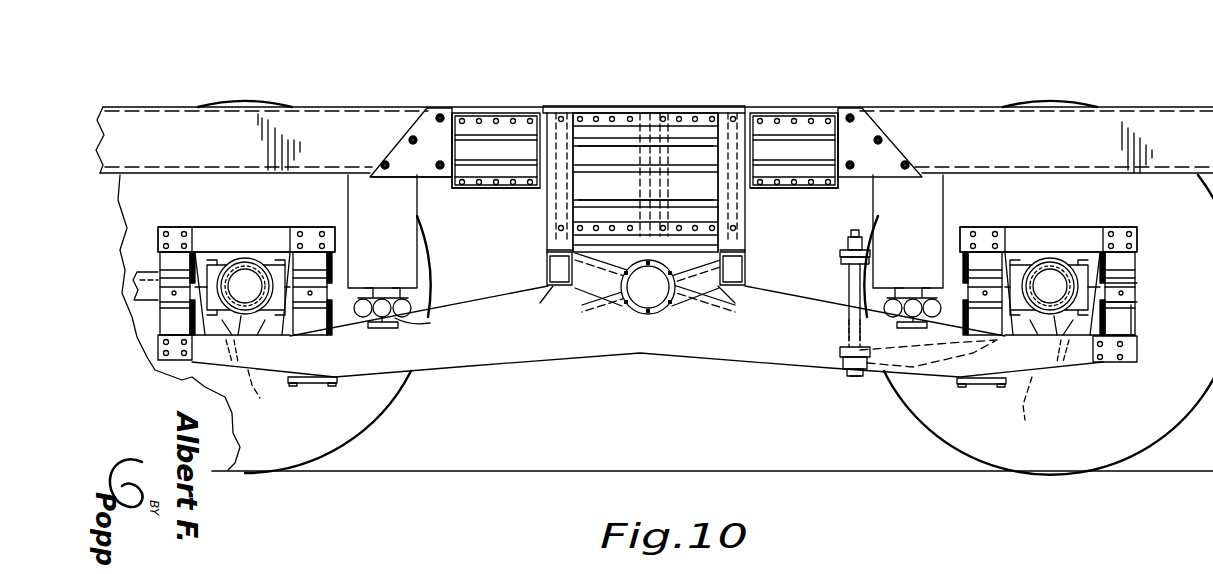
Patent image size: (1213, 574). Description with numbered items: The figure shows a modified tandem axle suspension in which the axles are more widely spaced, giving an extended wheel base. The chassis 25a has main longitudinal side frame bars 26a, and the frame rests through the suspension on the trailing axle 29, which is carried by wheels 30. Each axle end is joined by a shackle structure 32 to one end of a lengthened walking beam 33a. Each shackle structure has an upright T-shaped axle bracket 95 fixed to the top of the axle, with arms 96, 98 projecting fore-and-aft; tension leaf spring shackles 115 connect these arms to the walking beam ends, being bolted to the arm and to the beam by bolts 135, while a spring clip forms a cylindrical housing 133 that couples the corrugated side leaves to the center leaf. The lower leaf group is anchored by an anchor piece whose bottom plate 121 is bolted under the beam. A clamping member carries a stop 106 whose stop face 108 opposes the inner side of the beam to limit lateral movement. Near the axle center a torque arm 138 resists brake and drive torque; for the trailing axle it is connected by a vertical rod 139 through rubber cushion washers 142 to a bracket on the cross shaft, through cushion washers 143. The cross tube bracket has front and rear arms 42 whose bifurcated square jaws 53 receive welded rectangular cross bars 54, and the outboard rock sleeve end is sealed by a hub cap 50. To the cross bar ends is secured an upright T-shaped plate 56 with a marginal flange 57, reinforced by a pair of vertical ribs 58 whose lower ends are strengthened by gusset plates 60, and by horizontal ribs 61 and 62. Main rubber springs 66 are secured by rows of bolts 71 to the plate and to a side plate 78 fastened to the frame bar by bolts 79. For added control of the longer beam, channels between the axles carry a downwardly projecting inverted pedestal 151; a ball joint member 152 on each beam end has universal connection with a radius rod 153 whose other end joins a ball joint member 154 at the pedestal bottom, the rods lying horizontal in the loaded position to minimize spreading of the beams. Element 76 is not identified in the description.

The chassis 25a is at (152, 100).
The main longitudinal side frame bar 26a is at (1200, 122).
The side plate 78 is at (441, 113).
The bolts 79 is at (410, 138).
The side plate flange 76 is at (491, 118).
The vertical ribs 58 is at (563, 116).
The bolts 71 is at (612, 117).
The main rubber springs 66 is at (659, 112).
The upright metal plate 56 is at (676, 152).
The marginal flange 57 is at (496, 190).
The horizontal ribs 61 is at (494, 168).
The horizontal ribs 62 is at (616, 140).
The gusset plates 60 is at (547, 274).
The square jaws 53 is at (549, 246).
The cross bars 54 is at (550, 262).
The hub cap 50 is at (641, 304).
The arms 42 is at (712, 290).
The inverted pedestal 151 is at (420, 229).
The radius rod 153 is at (396, 318).
The ball joint member 152 is at (393, 340).
The walking beam 33a is at (600, 360).
The shackle structure 32 is at (148, 258).
The arm 96 is at (202, 228).
The arm 98 is at (293, 228).
The T-shaped axle bracket 95 is at (246, 226).
The trailing axle 29 is at (263, 266).
The stop face 108 is at (255, 336).
The stop 106 is at (253, 390).
The bottom plate 121 is at (312, 384).
The axle torque arm 138 is at (137, 288).
The ball joint member 154 is at (398, 296).
The wheels 30 is at (372, 420).
The cushion washers 143 is at (843, 251).
The vertical rod 139 is at (846, 267).
The rubber cushion washers 142 is at (848, 366).
The cylindrical housing 133 is at (1140, 296).
The tension leaf spring shackle 115 is at (1152, 320).
The bolts 135 is at (1121, 363).